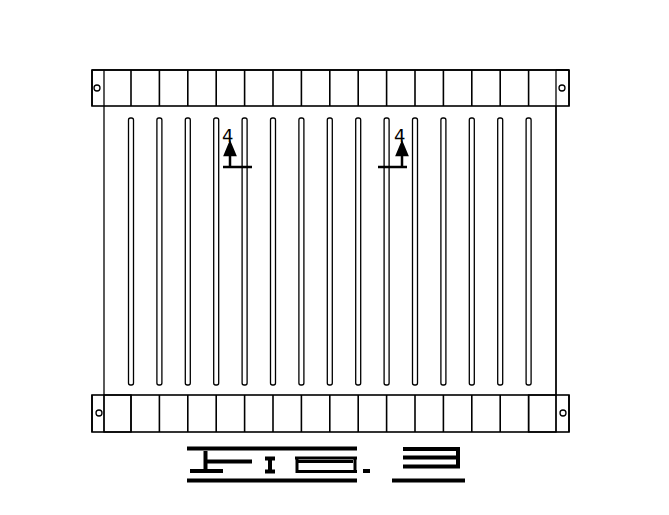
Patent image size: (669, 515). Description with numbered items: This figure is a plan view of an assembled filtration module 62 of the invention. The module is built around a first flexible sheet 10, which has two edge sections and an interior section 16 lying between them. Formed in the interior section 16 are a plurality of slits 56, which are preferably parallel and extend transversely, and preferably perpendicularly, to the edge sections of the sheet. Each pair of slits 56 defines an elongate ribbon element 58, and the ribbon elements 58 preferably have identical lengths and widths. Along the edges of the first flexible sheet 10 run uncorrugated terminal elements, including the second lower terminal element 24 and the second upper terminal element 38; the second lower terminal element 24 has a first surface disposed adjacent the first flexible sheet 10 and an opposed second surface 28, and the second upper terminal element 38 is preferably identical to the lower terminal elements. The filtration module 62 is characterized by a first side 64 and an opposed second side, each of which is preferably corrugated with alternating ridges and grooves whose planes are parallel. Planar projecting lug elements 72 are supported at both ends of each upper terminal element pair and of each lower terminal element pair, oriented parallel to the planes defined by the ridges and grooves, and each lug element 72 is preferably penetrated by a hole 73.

The first flexible sheet 10 is at (547, 150).
The interior section 16 is at (547, 250).
The second lower terminal element 24 is at (118, 422).
The second surface 28 is at (545, 420).
The second upper terminal element 38 is at (256, 80).
The slits 56 is at (192, 121).
The ribbon element 58 is at (174, 365).
The filtration module 62 is at (556, 68).
The first side 64 is at (543, 331).
The lug element 72 is at (92, 78).
The hole 73 is at (94, 90).